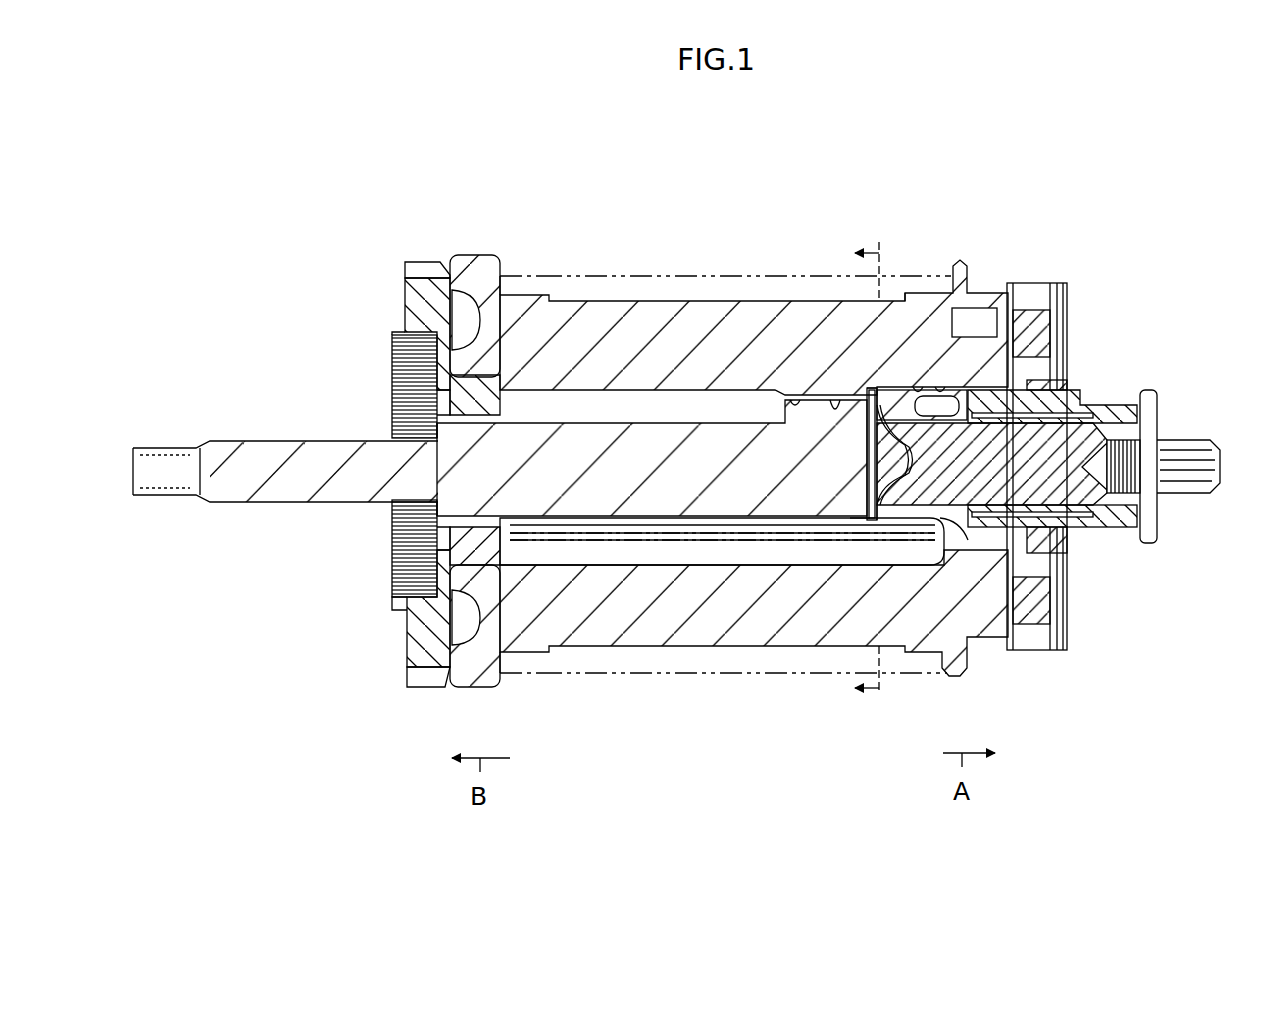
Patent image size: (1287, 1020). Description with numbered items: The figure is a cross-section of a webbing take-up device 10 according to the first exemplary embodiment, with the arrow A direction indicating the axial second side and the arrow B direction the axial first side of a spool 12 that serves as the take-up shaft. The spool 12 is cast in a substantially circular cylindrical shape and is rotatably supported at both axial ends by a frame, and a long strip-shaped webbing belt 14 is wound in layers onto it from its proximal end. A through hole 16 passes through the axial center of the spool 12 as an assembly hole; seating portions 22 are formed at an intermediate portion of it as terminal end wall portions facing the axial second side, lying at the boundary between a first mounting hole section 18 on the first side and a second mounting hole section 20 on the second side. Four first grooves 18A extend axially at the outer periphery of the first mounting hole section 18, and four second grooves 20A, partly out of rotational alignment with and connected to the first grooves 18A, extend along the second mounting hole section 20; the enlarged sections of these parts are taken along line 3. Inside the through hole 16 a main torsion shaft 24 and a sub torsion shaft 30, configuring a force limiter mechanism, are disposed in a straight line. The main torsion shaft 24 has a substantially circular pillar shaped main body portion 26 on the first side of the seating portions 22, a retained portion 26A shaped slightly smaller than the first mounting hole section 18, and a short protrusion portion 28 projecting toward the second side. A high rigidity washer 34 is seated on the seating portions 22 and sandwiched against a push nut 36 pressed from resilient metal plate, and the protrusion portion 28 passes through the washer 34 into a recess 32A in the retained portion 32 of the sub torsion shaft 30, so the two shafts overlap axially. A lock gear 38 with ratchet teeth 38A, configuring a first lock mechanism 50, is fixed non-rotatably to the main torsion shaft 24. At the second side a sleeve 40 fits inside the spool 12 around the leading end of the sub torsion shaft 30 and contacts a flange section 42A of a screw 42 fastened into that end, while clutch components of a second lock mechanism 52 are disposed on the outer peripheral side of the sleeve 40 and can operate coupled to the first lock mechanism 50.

The section line 3 is at (866, 242).
The webbing take-up device 10 is at (893, 170).
The spool 12 is at (658, 295).
The webbing belt 14 is at (598, 530).
The through hole 16 is at (697, 388).
The first mounting hole section 18 is at (832, 400).
The first grooves 18A is at (797, 398).
The second mounting hole section 20 is at (940, 385).
The second grooves 20A is at (913, 388).
The seating portions 22 is at (874, 392).
The main torsion shaft 24 is at (660, 520).
The main body portion 26 is at (722, 520).
The retained portion 26A is at (865, 395).
The protrusion portion 28 is at (885, 512).
The sub torsion shaft 30 is at (945, 512).
The retained portion 32 is at (948, 530).
The recess 32A is at (922, 405).
The washer 34 is at (865, 520).
The push nut 36 is at (878, 528).
The lock gear 38 is at (422, 240).
The ratchet teeth 38A is at (403, 262).
The sleeve 40 is at (1097, 390).
The screw 42 is at (1183, 435).
The flange section 42A is at (1170, 405).
The first lock mechanism 50 is at (333, 232).
The second lock mechanism 52 is at (1110, 280).